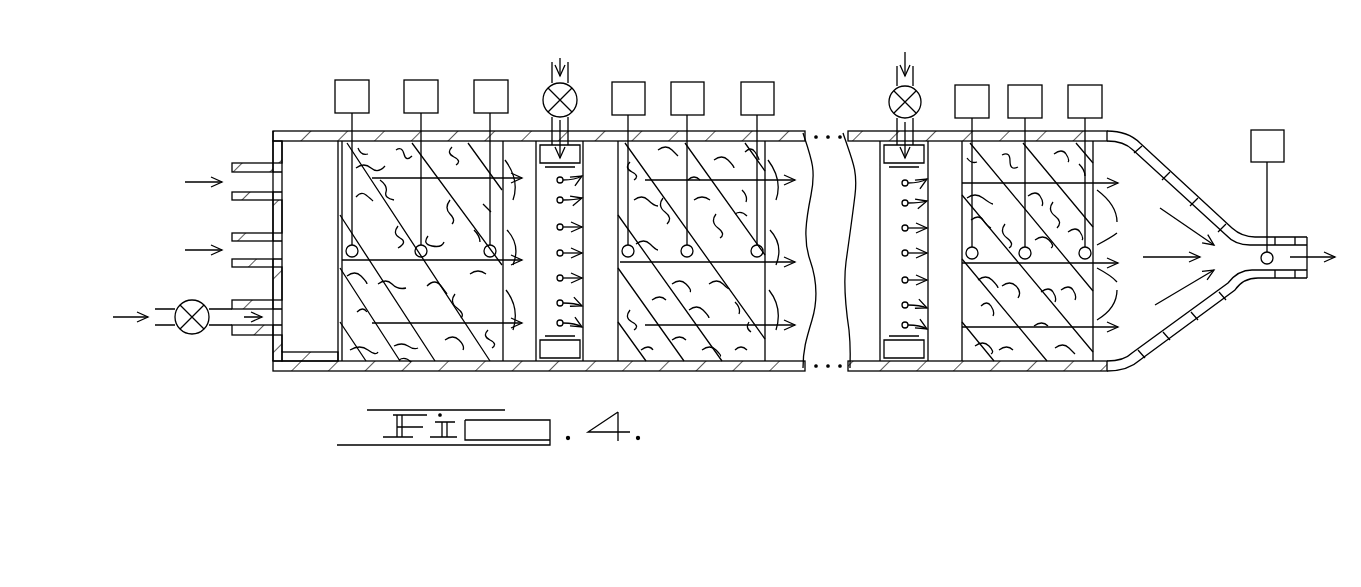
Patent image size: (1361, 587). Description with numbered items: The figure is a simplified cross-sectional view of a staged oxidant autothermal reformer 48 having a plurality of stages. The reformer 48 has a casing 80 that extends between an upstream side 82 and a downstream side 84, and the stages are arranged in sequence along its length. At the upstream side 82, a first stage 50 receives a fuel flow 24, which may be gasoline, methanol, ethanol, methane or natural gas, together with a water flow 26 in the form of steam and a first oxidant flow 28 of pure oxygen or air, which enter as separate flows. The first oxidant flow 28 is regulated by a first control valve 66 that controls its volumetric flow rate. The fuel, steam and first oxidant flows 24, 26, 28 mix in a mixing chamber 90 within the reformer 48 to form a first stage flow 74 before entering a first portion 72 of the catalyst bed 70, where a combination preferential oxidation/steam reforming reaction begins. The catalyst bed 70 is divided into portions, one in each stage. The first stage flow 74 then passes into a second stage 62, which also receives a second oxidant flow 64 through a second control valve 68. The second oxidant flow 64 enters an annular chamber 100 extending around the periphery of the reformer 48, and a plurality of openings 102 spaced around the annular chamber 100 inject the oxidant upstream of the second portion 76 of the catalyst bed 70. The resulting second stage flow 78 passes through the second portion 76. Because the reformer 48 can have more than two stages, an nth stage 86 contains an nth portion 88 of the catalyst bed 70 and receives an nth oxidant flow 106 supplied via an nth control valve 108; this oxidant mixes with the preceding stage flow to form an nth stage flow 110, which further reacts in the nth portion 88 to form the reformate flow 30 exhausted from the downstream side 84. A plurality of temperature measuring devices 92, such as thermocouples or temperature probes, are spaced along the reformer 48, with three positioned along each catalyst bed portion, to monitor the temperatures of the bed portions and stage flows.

The fuel flow 24 is at (197, 181).
The water flow 26 is at (186, 249).
The first oxidant flow 28 is at (123, 316).
The reformate flow 30 is at (1313, 266).
The autothermal reformer 48 is at (778, 50).
The first stage 50 is at (362, 378).
The second stage 62 is at (742, 378).
The second oxidant flow 64 is at (578, 128).
The first control valve 66 is at (201, 340).
The second control valve 68 is at (572, 88).
The catalyst bed 70 is at (410, 350).
The first portion of the catalyst bed 72 is at (470, 362).
The first stage flow 74 is at (519, 245).
The second portion of the catalyst bed 76 is at (700, 362).
The second stage flow 78 is at (783, 245).
The casing 80 is at (1150, 155).
The upstream side 82 is at (278, 108).
The downstream side 84 is at (1212, 162).
The nth stage 86 is at (1062, 380).
The nth portion of the catalyst bed 88 is at (1012, 362).
The mixing chamber 90 is at (300, 175).
The temperature measuring devices 92 is at (476, 80).
The annular chamber 100 is at (556, 358).
The openings 102 is at (548, 145).
The nth oxidant flow 106 is at (893, 127).
The nth control valve 108 is at (891, 90).
The nth stage flow 110 is at (1110, 222).